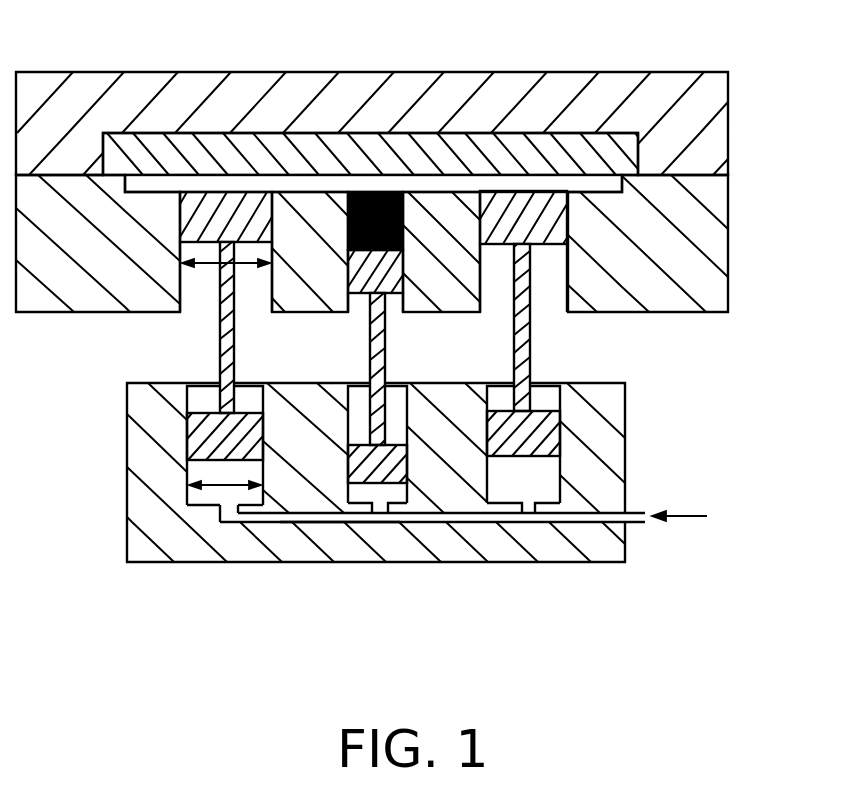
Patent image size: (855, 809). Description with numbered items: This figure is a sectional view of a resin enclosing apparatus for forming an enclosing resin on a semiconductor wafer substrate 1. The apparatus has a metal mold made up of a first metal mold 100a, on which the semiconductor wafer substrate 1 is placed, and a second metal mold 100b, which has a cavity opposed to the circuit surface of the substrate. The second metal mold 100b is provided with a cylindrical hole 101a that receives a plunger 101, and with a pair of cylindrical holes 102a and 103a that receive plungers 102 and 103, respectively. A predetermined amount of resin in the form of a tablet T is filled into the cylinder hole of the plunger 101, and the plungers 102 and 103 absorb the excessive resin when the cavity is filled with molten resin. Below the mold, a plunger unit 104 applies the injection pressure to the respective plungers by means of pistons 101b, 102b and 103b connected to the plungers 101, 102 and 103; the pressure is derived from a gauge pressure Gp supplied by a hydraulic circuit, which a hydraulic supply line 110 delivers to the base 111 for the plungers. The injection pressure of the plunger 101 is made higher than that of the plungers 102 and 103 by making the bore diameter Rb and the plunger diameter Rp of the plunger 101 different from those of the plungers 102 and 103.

The semiconductor wafer substrate 1 is at (447, 133).
The tablet T is at (352, 193).
The first metal mold 100a is at (728, 132).
The second metal mold 100b is at (728, 230).
The plunger 101 is at (358, 300).
The cylindrical hole 101a is at (405, 292).
The piston 101b is at (398, 487).
The plunger 102 is at (207, 292).
The cylindrical hole 102a is at (187, 298).
The piston 102b is at (240, 461).
The plunger 103 is at (500, 247).
The cylindrical hole 103a is at (562, 300).
The piston 103b is at (545, 458).
The plunger unit 104 is at (625, 437).
The hydraulic supply line 110 is at (333, 523).
The base 111 is at (632, 523).
The plunger diameter Rp is at (231, 306).
The bore diameter Rb is at (217, 489).
The gauge pressure Gp is at (704, 511).